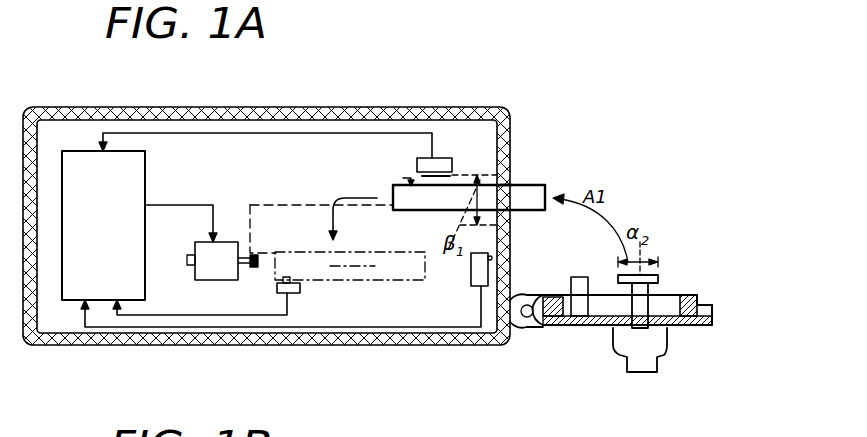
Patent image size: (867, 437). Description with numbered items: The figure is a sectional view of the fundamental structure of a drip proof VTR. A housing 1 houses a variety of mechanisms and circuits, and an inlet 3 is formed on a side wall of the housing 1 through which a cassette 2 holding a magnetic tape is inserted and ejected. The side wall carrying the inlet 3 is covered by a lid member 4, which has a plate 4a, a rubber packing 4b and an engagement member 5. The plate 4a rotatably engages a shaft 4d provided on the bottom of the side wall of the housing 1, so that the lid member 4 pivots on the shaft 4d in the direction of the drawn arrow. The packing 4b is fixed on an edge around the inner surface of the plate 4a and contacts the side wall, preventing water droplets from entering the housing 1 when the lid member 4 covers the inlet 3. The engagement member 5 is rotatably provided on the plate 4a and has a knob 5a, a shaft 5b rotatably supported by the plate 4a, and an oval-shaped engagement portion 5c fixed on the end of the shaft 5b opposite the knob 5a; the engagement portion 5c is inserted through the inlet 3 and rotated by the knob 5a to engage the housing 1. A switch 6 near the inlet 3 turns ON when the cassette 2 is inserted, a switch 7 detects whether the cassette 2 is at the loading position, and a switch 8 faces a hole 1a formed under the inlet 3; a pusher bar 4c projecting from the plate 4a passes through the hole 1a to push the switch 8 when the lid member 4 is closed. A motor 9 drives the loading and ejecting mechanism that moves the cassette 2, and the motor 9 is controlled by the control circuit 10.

The housing 1 is at (462, 107).
The hole 1a is at (510, 258).
The cassette 2 is at (533, 185).
The inlet 3 is at (508, 183).
The lid member 4 is at (701, 333).
The plate 4a is at (712, 318).
The packing 4b is at (690, 295).
The pusher bar 4c is at (580, 278).
The shaft 4d is at (527, 317).
The engagement member 5 is at (642, 308).
The knob 5a is at (628, 350).
The shaft 5b is at (652, 292).
The engagement portion 5c is at (656, 278).
The switch 6 is at (417, 164).
The switch 7 is at (300, 288).
The switch 8 is at (471, 275).
The motor 9 is at (215, 273).
The control circuit 10 is at (145, 183).